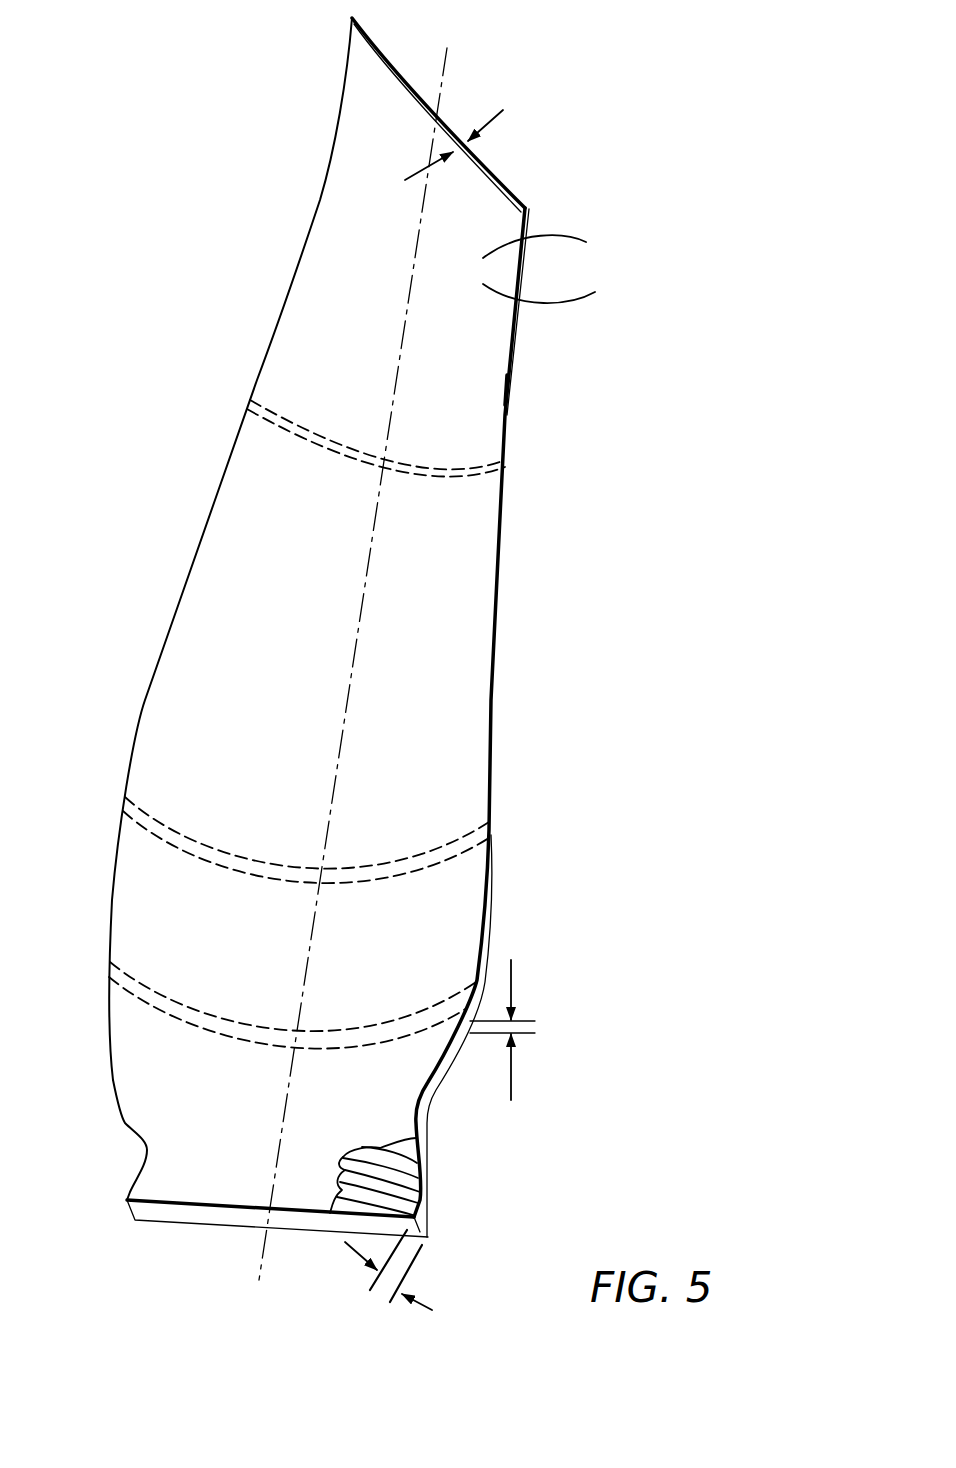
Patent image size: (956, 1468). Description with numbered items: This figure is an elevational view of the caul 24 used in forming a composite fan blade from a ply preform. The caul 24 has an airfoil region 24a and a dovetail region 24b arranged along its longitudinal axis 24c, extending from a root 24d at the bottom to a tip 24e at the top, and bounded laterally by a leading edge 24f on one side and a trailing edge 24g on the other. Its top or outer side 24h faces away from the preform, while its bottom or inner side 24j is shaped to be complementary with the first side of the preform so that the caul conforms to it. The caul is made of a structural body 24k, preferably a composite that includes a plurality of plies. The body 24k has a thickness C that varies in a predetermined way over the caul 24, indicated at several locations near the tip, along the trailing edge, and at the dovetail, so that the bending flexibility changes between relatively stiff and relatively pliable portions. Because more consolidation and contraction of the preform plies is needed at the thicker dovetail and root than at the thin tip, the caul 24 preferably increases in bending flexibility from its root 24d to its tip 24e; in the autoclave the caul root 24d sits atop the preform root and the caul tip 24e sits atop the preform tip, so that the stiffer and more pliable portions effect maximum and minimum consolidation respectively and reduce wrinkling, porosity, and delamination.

The caul 24 is at (587, 522).
The airfoil region 24a is at (490, 379).
The dovetail region 24b is at (306, 1196).
The longitudinal axis 24c is at (350, 694).
The root 24d is at (150, 1150).
The tip 24e is at (513, 188).
The leading edge 24f is at (187, 553).
The trailing edge 24g is at (491, 657).
The top or outer side 24h is at (559, 289).
The bottom or inner side 24j is at (551, 246).
The structural body 24k is at (405, 1173).
The thickness C is at (503, 110).